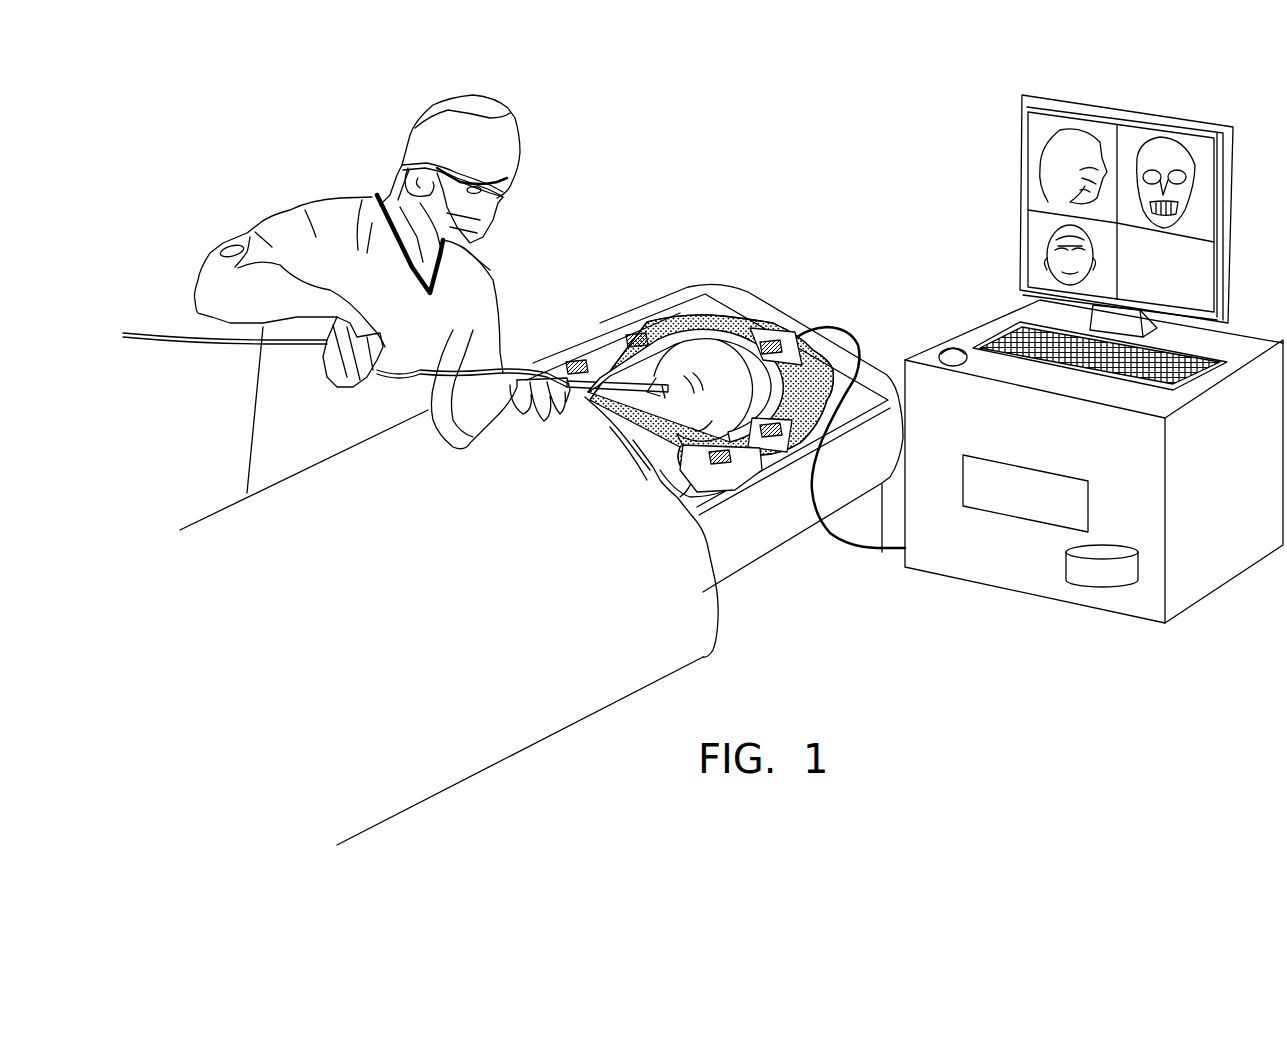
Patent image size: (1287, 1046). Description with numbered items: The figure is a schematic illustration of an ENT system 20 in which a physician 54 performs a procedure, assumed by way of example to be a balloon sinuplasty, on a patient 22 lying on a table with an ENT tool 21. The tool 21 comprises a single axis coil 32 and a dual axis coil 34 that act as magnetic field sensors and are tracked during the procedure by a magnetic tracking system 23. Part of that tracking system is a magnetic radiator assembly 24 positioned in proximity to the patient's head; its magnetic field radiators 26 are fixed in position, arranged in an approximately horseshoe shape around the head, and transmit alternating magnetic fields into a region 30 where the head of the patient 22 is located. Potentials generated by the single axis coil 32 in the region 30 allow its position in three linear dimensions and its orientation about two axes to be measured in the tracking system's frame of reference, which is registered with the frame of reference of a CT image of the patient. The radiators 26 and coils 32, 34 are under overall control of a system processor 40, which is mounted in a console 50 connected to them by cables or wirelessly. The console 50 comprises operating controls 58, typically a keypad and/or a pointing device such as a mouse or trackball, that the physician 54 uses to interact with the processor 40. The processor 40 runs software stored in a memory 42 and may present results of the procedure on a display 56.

The ENT system 20 is at (587, 148).
The ENT tool 21 is at (585, 407).
The patient 22 is at (660, 477).
The magnetic tracking system 23 is at (798, 611).
The magnetic radiator assembly 24 is at (731, 340).
The magnetic field radiators 26 is at (623, 337).
The region 30 is at (650, 293).
The single axis coil 32 is at (547, 280).
The dual axis coil 34 is at (573, 280).
The system processor 40 is at (1022, 466).
The memory 42 is at (1122, 547).
The console 50 is at (1210, 577).
The physician 54 is at (424, 147).
The display 56 is at (1100, 110).
The operating controls 58 is at (997, 332).